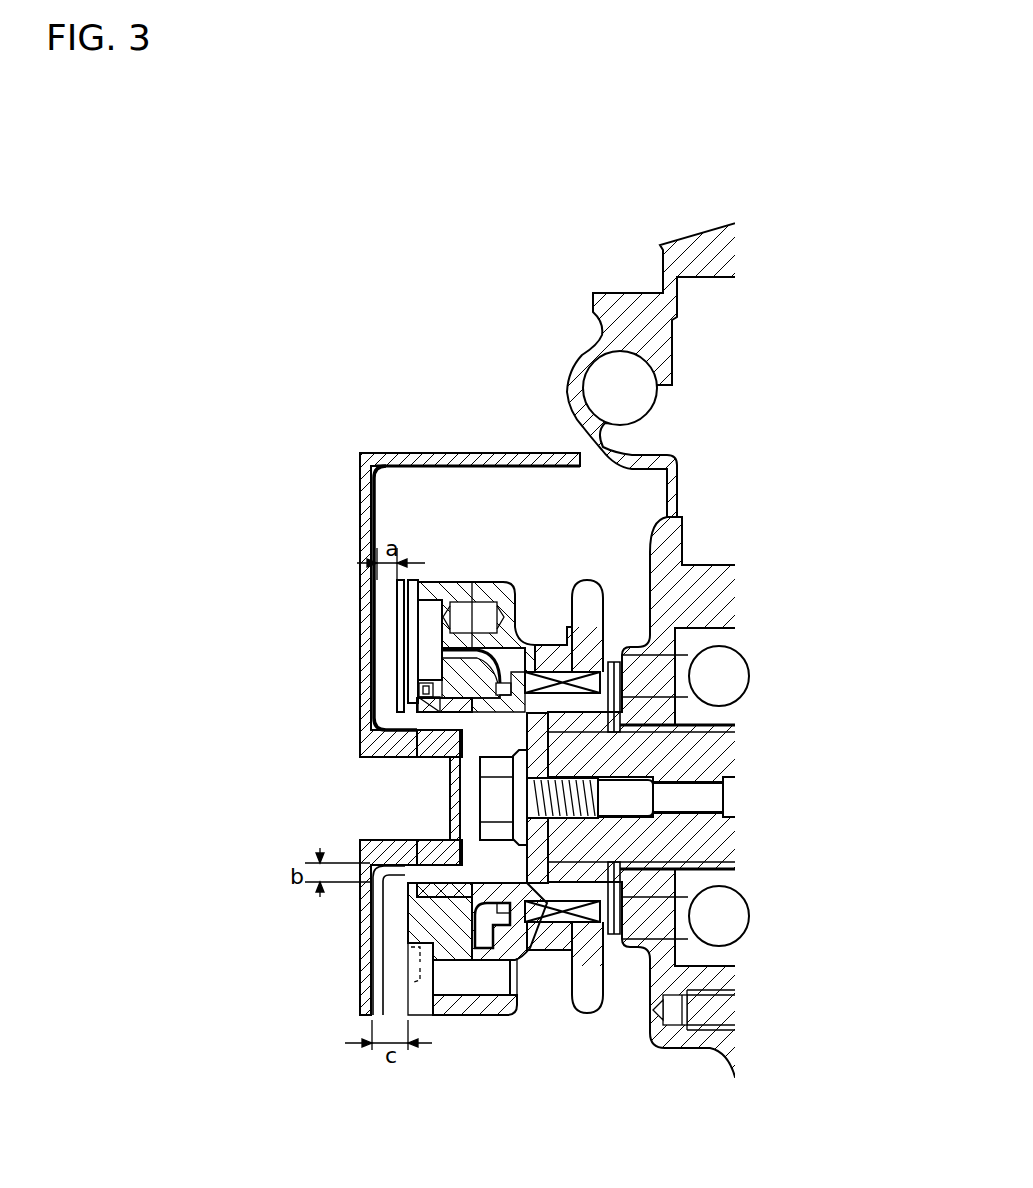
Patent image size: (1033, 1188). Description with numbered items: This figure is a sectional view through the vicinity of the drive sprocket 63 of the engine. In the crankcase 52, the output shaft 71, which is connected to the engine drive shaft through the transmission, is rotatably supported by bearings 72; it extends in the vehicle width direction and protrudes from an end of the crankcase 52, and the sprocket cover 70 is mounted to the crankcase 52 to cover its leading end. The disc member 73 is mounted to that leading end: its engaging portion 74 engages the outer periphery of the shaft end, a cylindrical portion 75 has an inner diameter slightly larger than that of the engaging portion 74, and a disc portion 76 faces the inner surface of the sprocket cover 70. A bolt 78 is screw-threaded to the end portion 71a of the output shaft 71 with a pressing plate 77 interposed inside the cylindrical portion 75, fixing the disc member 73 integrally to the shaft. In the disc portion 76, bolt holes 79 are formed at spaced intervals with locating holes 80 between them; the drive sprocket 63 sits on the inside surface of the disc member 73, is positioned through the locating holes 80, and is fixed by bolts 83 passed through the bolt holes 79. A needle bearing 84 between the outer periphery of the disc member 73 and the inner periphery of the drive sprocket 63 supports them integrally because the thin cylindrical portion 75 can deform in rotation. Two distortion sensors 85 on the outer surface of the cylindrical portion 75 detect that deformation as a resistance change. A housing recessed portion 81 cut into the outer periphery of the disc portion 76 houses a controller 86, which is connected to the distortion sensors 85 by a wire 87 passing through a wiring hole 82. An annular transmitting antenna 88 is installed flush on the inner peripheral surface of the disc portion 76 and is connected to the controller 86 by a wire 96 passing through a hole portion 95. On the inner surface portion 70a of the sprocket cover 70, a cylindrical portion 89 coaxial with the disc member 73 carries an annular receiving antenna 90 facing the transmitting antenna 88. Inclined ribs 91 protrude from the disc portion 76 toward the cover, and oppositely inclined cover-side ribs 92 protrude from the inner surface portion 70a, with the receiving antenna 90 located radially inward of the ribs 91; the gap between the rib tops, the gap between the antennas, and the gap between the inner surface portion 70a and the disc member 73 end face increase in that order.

The crankcase 52 is at (697, 1037).
The drive sprocket 63 is at (588, 580).
The sprocket cover 70 is at (412, 455).
The inner surface portion 70a is at (382, 498).
The output shaft 71 is at (710, 757).
The end portion 71a is at (703, 735).
The bearings 72 is at (724, 662).
The disc member 73 is at (456, 580).
The engaging portion 74 is at (574, 968).
The cylindrical portion 75 is at (513, 946).
The disc portion 76 is at (447, 1006).
The pressing plate 77 is at (522, 902).
The bolt 78 is at (500, 824).
The bolt holes 79 is at (457, 992).
The locating holes 80 is at (466, 610).
The housing recessed portion 81 is at (440, 603).
The wiring hole 82 is at (449, 683).
The bolts 83 is at (407, 993).
The needle bearing 84 is at (557, 678).
The distortion sensors 85 is at (532, 668).
The controller 86 is at (420, 600).
The wire 87 is at (505, 686).
The transmitting antenna 88 is at (457, 713).
The cylindrical portion 89 is at (402, 867).
The receiving antenna 90 is at (420, 843).
The ribs 91 is at (400, 634).
The cover-side ribs 92 is at (395, 954).
The hole portion 95 is at (418, 689).
The wire 96 is at (402, 697).